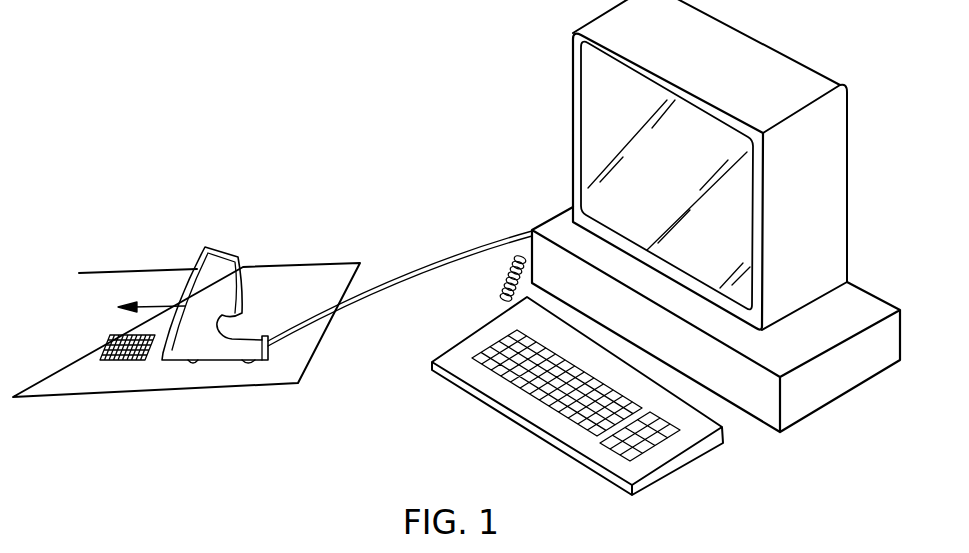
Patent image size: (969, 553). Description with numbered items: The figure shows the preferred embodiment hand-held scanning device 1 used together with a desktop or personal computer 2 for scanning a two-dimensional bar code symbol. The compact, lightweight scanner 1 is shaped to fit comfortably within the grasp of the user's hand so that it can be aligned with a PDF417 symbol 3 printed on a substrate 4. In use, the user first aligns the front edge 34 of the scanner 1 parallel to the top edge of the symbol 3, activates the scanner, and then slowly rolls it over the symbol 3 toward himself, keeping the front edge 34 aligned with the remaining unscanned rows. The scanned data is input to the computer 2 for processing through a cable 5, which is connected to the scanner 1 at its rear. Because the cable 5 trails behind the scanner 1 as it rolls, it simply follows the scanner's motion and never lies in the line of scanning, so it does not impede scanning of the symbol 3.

The hand-held scanning device 1 is at (193, 350).
The personal computer 2 is at (557, 223).
The PDF417 symbol 3 is at (118, 361).
The substrate 4 is at (65, 377).
The cable 5 is at (407, 280).
The front edge 34 is at (185, 305).